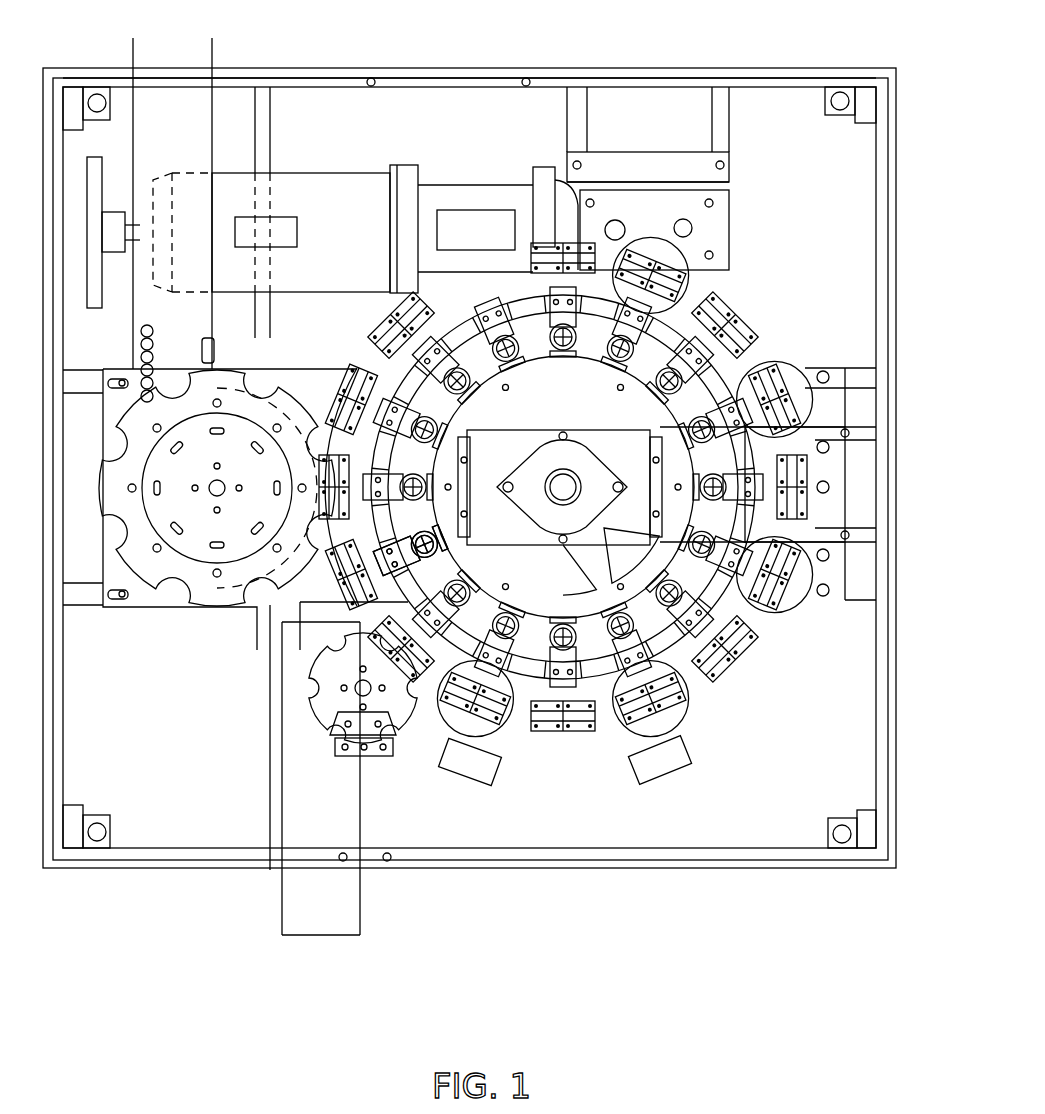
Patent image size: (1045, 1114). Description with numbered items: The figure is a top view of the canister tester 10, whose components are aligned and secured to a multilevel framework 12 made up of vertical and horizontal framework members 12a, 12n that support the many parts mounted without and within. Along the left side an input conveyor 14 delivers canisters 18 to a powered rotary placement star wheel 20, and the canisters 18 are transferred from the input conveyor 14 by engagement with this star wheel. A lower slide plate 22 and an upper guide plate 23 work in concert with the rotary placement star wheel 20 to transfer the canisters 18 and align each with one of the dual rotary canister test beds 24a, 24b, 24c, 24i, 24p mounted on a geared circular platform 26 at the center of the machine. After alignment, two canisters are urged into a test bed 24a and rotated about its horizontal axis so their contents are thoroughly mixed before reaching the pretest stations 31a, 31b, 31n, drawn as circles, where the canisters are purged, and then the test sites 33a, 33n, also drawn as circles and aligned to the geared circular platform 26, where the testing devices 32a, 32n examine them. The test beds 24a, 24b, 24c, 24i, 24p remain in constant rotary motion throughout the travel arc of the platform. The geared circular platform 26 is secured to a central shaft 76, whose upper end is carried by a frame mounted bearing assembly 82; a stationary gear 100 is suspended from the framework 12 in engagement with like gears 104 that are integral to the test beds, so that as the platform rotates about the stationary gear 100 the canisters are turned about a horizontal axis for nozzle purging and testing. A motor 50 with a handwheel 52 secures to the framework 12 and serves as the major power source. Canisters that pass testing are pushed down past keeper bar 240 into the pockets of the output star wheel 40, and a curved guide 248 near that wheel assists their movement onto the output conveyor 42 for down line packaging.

The canister tester 10 is at (800, 42).
The multilevel framework 12 is at (740, 63).
The framework member 12a is at (643, 78).
The framework member 12n is at (867, 838).
The input conveyor 14 is at (215, 53).
The canister 18 is at (152, 326).
The rotary placement star wheel 20 is at (193, 585).
The lower slide plate 22 is at (236, 562).
The upper guide plate 23 is at (256, 340).
The dual rotary canister test bed 24a is at (322, 480).
The dual rotary canister test bed 24b is at (350, 355).
The dual rotary canister test bed 24c is at (398, 312).
The dual rotary canister test bed 24i is at (810, 468).
The dual rotary canister test bed 24p is at (340, 562).
The geared circular platform 26 is at (682, 658).
The pretest station 31a is at (687, 255).
The pretest station 31b is at (790, 357).
The pretest station 31n is at (797, 612).
The testing device 32a is at (658, 767).
The testing device 32n is at (498, 770).
The test site 33a is at (678, 723).
The test site 33n is at (505, 743).
The output star wheel 40 is at (393, 700).
The output conveyor 42 is at (362, 895).
The motor 50 is at (441, 212).
The handwheel 52 is at (95, 160).
The central shaft 76 is at (572, 481).
The bearing assembly 82 is at (577, 463).
The stationary gear 100 is at (600, 570).
The gear 104 is at (662, 527).
The keeper bar 240 is at (470, 680).
The curved guide 248 is at (357, 578).